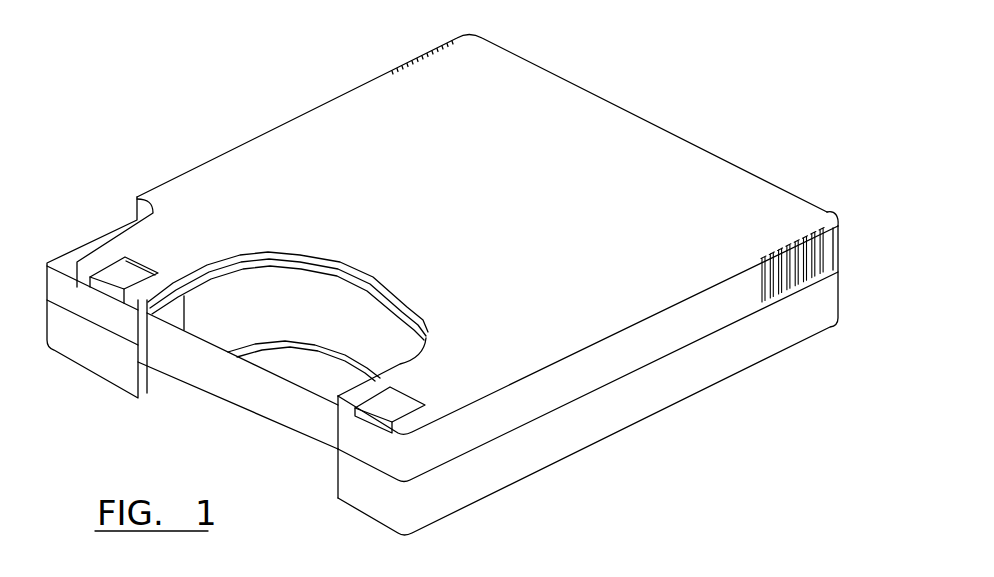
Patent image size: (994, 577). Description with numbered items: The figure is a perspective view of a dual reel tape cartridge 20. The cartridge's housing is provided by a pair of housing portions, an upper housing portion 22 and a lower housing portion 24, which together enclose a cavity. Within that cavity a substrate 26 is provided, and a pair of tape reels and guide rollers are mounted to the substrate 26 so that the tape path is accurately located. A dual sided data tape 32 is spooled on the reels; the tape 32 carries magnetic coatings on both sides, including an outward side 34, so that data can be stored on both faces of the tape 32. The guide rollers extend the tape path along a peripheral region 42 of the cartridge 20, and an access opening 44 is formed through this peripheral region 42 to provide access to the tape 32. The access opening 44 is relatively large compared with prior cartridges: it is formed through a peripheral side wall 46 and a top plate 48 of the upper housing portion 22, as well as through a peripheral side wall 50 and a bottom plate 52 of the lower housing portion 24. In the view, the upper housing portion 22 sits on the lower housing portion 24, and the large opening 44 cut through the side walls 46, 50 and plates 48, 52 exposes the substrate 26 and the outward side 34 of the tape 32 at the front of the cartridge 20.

The tape cartridge 20 is at (757, 78).
The upper housing portion 22 is at (725, 197).
The lower housing portion 24 is at (818, 333).
The substrate 26 is at (220, 277).
The dual sided data tape 32 is at (268, 426).
The outward side 34 is at (180, 356).
The peripheral region 42 is at (110, 360).
The access opening 44 is at (280, 263).
The peripheral side wall 46 is at (353, 453).
The top plate 48 is at (427, 369).
The peripheral side wall 50 is at (363, 488).
The bottom plate 52 is at (347, 325).